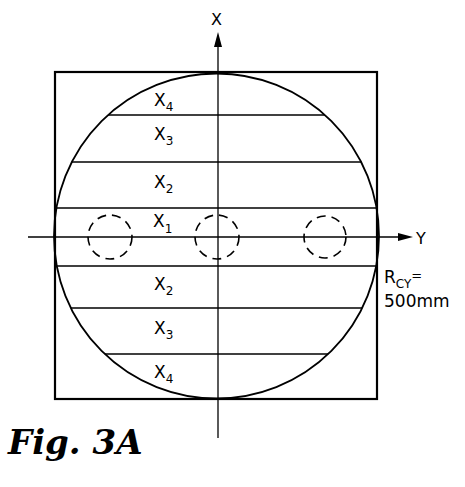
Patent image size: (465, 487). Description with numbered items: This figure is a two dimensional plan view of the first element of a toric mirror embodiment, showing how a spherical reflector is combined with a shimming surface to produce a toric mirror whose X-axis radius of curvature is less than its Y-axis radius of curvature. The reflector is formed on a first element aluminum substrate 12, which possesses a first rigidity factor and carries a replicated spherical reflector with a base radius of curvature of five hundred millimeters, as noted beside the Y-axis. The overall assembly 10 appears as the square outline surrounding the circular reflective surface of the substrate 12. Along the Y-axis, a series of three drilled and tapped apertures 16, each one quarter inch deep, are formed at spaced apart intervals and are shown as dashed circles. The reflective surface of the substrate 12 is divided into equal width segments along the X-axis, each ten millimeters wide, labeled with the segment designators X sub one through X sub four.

The mirror blank 10 is at (108, 62).
The first element aluminum substrate 12 is at (353, 128).
The apertures 16 is at (119, 252).